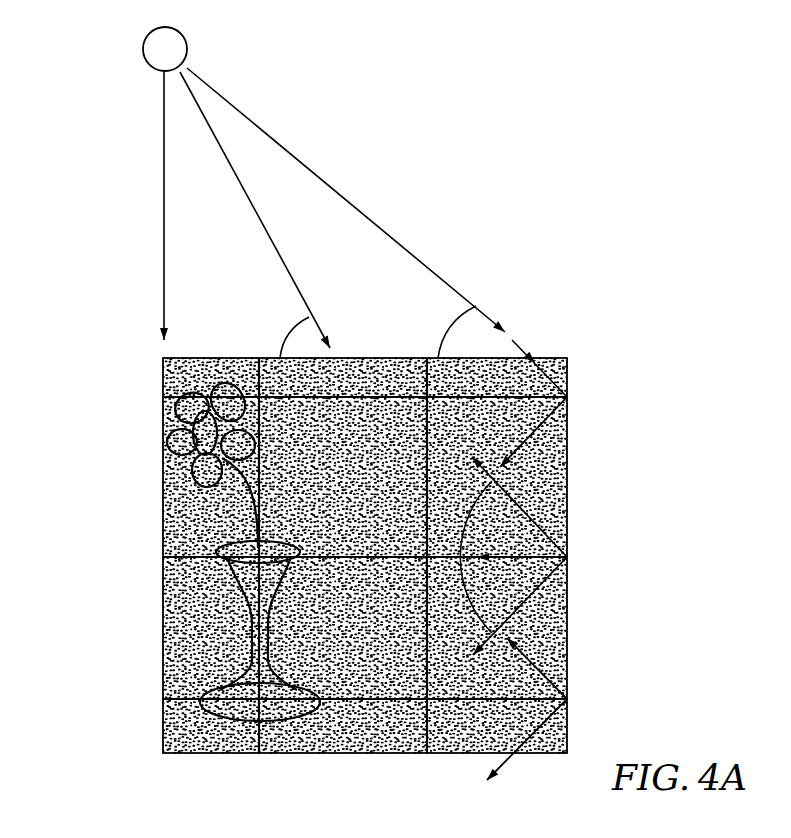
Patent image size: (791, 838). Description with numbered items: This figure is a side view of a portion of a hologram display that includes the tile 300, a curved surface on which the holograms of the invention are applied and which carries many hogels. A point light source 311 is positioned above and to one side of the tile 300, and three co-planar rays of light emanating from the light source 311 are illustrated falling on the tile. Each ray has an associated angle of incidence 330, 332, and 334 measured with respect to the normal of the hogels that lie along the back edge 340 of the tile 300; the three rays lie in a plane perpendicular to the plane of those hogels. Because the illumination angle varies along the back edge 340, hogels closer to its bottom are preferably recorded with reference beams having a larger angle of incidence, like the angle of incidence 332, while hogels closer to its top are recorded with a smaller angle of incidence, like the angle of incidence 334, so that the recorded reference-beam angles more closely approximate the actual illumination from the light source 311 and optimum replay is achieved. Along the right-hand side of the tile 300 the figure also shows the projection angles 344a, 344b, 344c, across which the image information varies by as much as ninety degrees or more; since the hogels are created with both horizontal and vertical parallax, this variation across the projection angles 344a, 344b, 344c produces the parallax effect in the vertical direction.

The tile 300 is at (112, 600).
The light source 311 is at (186, 37).
The angle of incidence 330 is at (143, 209).
The angle of incidence 332 is at (255, 215).
The angle of incidence 334 is at (377, 232).
The back edge 340 is at (569, 478).
The projection angle 344a is at (569, 397).
The projection angle 344b is at (569, 557).
The projection angle 344c is at (569, 699).